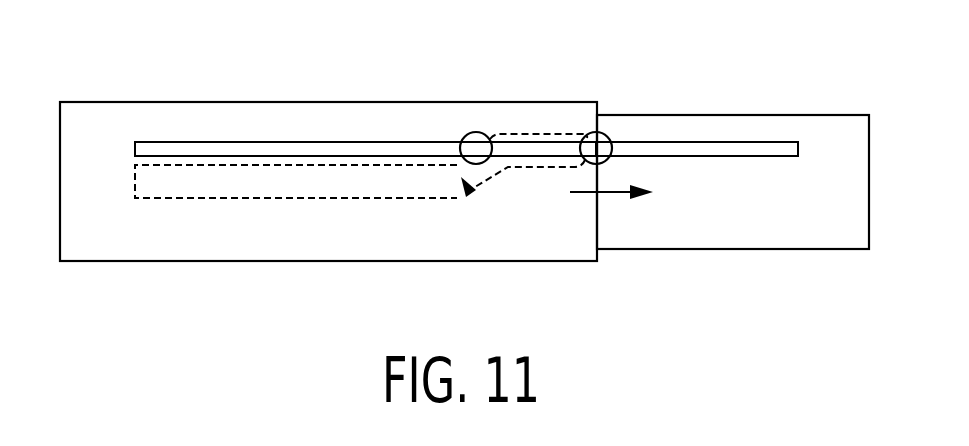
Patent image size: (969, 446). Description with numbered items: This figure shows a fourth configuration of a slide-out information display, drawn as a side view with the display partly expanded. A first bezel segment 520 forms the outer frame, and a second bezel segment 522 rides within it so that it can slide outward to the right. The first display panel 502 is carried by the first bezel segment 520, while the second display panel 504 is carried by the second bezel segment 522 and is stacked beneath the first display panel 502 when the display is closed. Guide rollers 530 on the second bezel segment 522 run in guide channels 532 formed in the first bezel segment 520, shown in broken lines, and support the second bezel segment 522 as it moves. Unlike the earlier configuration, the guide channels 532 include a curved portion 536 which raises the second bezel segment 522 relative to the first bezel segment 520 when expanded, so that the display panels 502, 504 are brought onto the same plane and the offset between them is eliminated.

The first bezel segment 520 is at (220, 101).
The second bezel segment 522 is at (845, 115).
The first display panel 502 is at (322, 141).
The second display panel 504 is at (672, 150).
The guide rollers 530 is at (476, 150).
The guide channels 532 is at (227, 199).
The curved portion 536 is at (468, 195).